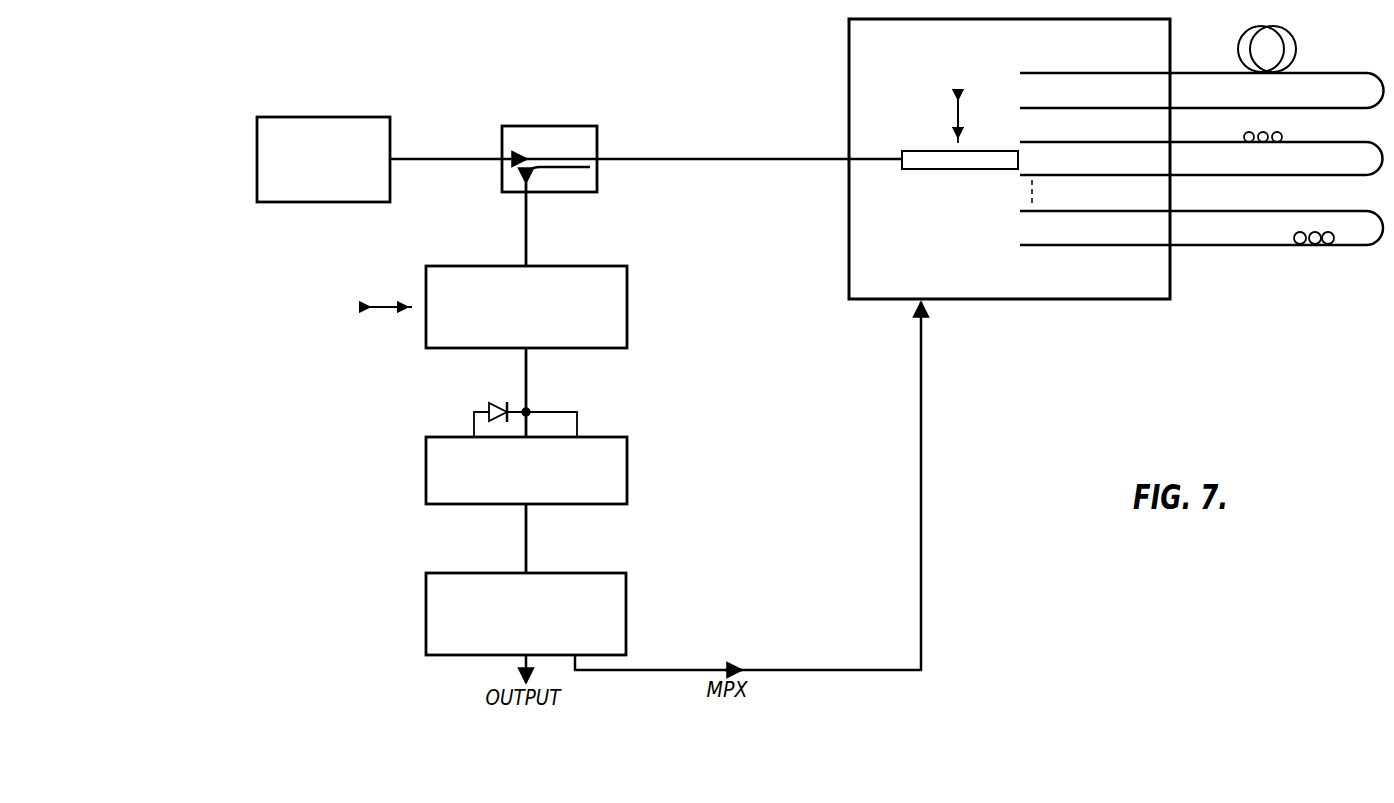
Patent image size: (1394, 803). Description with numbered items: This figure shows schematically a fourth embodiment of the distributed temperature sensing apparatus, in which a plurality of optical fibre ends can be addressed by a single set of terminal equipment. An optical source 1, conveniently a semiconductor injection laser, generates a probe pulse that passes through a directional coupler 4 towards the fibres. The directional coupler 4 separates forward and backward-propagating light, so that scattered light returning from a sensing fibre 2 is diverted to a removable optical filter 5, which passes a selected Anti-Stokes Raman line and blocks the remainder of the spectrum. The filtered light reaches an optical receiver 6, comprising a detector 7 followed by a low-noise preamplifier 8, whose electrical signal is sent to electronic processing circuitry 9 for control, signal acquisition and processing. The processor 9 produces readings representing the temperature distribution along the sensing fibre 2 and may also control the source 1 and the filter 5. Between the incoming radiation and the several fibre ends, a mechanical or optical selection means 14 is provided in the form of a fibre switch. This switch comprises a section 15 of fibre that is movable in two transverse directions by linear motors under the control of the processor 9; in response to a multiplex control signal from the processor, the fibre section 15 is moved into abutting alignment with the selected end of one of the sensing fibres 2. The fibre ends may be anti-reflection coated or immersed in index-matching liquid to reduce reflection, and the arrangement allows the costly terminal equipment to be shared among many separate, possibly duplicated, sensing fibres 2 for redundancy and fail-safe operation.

The optical source 1 is at (354, 118).
The sensing fibre 2 is at (1362, 109).
The directional coupler 4 is at (548, 126).
The optical filtering means 5 is at (585, 349).
The optical receiver 6 is at (407, 462).
The detector 7 is at (505, 394).
The low-noise preamplifier 8 is at (577, 505).
The electronic processing circuitry 9 is at (627, 641).
The selection means 14 is at (1110, 300).
The section of fibre 15 is at (960, 170).